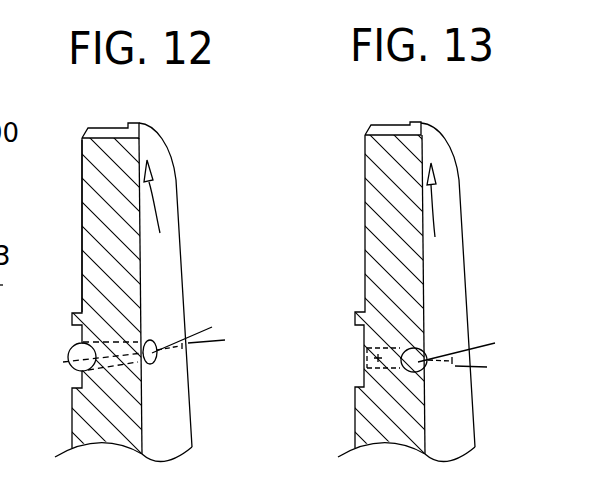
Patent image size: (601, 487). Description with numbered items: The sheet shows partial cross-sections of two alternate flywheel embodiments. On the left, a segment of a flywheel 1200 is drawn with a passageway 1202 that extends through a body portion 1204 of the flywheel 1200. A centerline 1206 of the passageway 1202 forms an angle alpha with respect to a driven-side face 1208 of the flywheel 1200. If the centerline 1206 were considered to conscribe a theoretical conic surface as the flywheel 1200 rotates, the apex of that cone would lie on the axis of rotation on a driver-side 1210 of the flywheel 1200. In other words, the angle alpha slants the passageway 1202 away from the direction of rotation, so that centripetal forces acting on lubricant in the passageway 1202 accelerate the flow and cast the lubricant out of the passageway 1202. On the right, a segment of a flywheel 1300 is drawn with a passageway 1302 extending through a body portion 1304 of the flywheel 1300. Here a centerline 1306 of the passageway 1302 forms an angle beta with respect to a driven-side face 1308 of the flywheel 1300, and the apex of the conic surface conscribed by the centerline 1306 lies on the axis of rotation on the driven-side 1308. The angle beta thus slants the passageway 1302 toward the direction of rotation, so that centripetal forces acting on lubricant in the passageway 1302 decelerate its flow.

In FIG. 12, the flywheel 1200 is at (178, 173).
In FIG. 12, the passageway 1202 is at (87, 363).
In FIG. 12, the body portion 1204 is at (113, 180).
In FIG. 12, the centerline 1206 is at (188, 349).
In FIG. 12, the driven-side face 1208 is at (158, 255).
In FIG. 12, the driver-side 1210 is at (82, 225).
In FIG. 13, the flywheel 1300 is at (472, 170).
In FIG. 13, the passageway 1302 is at (428, 372).
In FIG. 13, the body portion 1304 is at (390, 167).
In FIG. 13, the centerline 1306 is at (367, 355).
In FIG. 13, the driven-side face 1308 is at (443, 255).